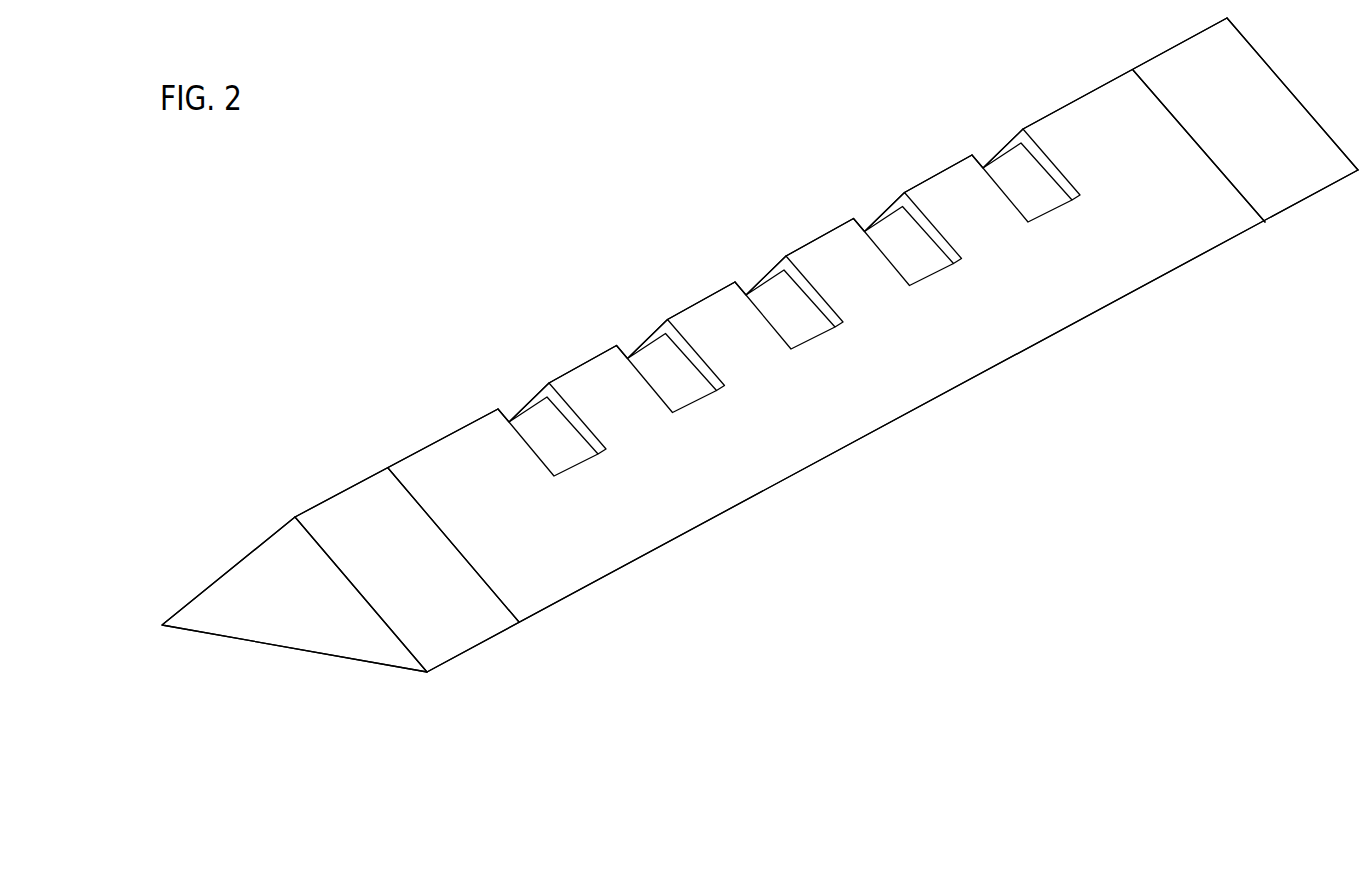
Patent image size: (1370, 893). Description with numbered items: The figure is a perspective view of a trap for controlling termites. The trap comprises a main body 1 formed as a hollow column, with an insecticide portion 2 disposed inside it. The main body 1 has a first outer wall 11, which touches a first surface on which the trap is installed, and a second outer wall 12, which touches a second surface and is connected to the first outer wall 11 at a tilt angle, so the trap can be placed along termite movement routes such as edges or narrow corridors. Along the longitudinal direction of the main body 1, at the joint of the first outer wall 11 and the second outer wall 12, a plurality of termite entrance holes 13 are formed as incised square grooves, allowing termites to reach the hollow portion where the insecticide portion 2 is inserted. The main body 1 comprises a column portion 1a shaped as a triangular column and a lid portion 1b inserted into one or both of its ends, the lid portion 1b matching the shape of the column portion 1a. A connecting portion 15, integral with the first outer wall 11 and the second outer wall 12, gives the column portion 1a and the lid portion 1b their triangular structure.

The main body 1 is at (619, 750).
The column portion 1a is at (560, 601).
The lid portion 1b is at (481, 644).
The insecticide portion 2 is at (649, 354).
The first outer wall 11 is at (438, 432).
The second outer wall 12 is at (425, 465).
The termite entrance hole 13 is at (864, 232).
The connecting portion 15 is at (1158, 278).